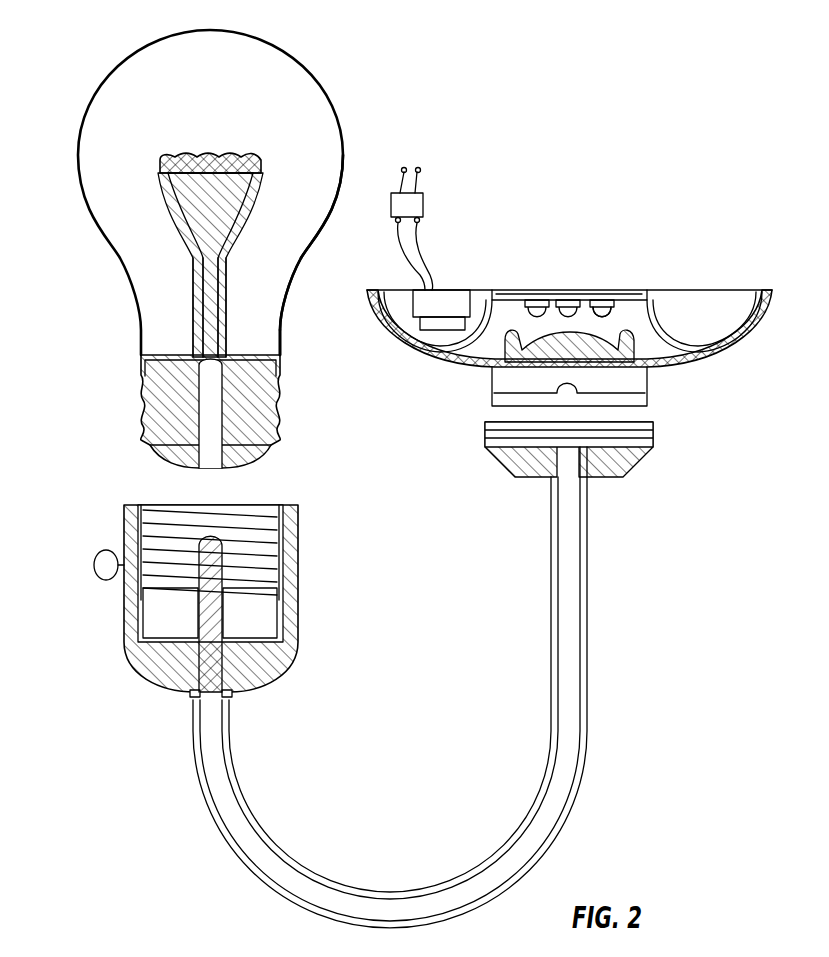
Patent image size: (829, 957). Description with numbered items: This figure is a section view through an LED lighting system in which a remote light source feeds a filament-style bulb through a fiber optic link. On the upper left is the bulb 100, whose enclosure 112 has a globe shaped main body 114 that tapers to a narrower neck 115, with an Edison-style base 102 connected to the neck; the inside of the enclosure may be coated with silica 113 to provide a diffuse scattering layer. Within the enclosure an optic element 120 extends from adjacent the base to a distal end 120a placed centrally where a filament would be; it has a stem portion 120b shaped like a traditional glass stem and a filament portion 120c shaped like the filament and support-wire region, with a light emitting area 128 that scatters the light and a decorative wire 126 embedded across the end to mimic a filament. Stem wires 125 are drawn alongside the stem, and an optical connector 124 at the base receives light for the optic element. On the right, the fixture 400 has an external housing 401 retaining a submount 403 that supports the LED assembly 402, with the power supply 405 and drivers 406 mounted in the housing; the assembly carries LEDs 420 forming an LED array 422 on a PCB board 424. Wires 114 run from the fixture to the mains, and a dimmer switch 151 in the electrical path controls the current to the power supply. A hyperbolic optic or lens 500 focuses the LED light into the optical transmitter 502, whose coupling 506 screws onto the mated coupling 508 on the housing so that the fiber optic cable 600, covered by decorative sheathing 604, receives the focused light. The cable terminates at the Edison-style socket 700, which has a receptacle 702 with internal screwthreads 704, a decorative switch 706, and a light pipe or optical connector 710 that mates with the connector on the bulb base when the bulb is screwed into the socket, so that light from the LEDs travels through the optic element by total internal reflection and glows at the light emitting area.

The bulb 100 is at (238, 264).
The base 102 is at (243, 426).
The enclosure 112 is at (347, 178).
The silica 113 is at (328, 218).
The globe shaped main body 114 is at (308, 258).
The neck 115 is at (284, 330).
The optic element 120 is at (208, 220).
The distal end 120a is at (159, 166).
The stem portion 120b is at (228, 275).
The filament portion 120c is at (246, 204).
The optical connector 124 is at (213, 460).
The stem wires 125 is at (212, 302).
The wire 126 is at (246, 158).
The light emitting area 128 is at (173, 196).
The dimmer switch 151 is at (425, 205).
The fixture 400 is at (576, 319).
The external housing 401 is at (745, 345).
The LED assembly 402 is at (510, 306).
The submount 403 is at (657, 333).
The power supply 405 is at (440, 300).
The drivers 406 is at (455, 330).
The LEDs 420 is at (600, 314).
The LED array 422 is at (622, 320).
The PCB board 424 is at (586, 312).
The hyperbolic optic or lens 500 is at (636, 350).
The optical transmitter 502 is at (413, 687).
The coupling 506 is at (655, 442).
The mated coupling 508 is at (650, 394).
The fiber optic cable 600 is at (420, 687).
The decorative sheathing 604 is at (588, 650).
The Edison-style socket 700 is at (219, 601).
The receptacle 702 is at (183, 623).
The internal screwthreads 704 is at (279, 565).
The switch 706 is at (107, 552).
The light pipe or optical connector 710 is at (213, 600).